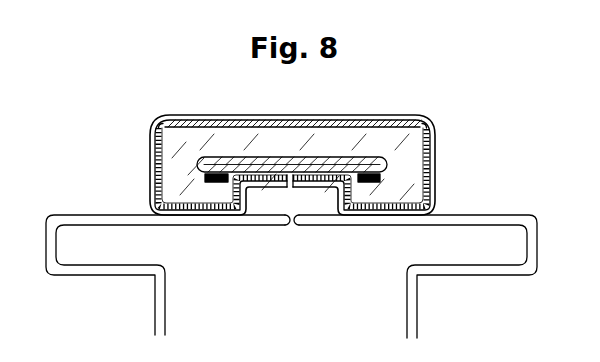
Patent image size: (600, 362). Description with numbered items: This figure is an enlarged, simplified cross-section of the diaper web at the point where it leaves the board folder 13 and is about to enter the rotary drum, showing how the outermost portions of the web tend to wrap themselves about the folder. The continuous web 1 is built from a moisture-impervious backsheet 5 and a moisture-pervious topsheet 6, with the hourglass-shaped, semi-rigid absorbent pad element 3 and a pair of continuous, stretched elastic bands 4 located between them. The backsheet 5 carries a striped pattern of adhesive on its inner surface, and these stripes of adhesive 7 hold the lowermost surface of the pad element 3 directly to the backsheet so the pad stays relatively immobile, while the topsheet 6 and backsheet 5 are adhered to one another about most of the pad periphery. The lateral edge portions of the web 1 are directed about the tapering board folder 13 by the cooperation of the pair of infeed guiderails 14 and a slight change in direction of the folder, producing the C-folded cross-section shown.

The continuous web 1 is at (144, 163).
The absorbent pad element 3 is at (147, 141).
The stretched elastic bands 4 is at (222, 184).
The moisture-impervious backsheet 5 is at (379, 121).
The moisture-pervious topsheet 6 is at (237, 124).
The stripes of adhesive 7 is at (161, 126).
The board folder 13 is at (322, 157).
The infeed guiderails 14 is at (170, 309).